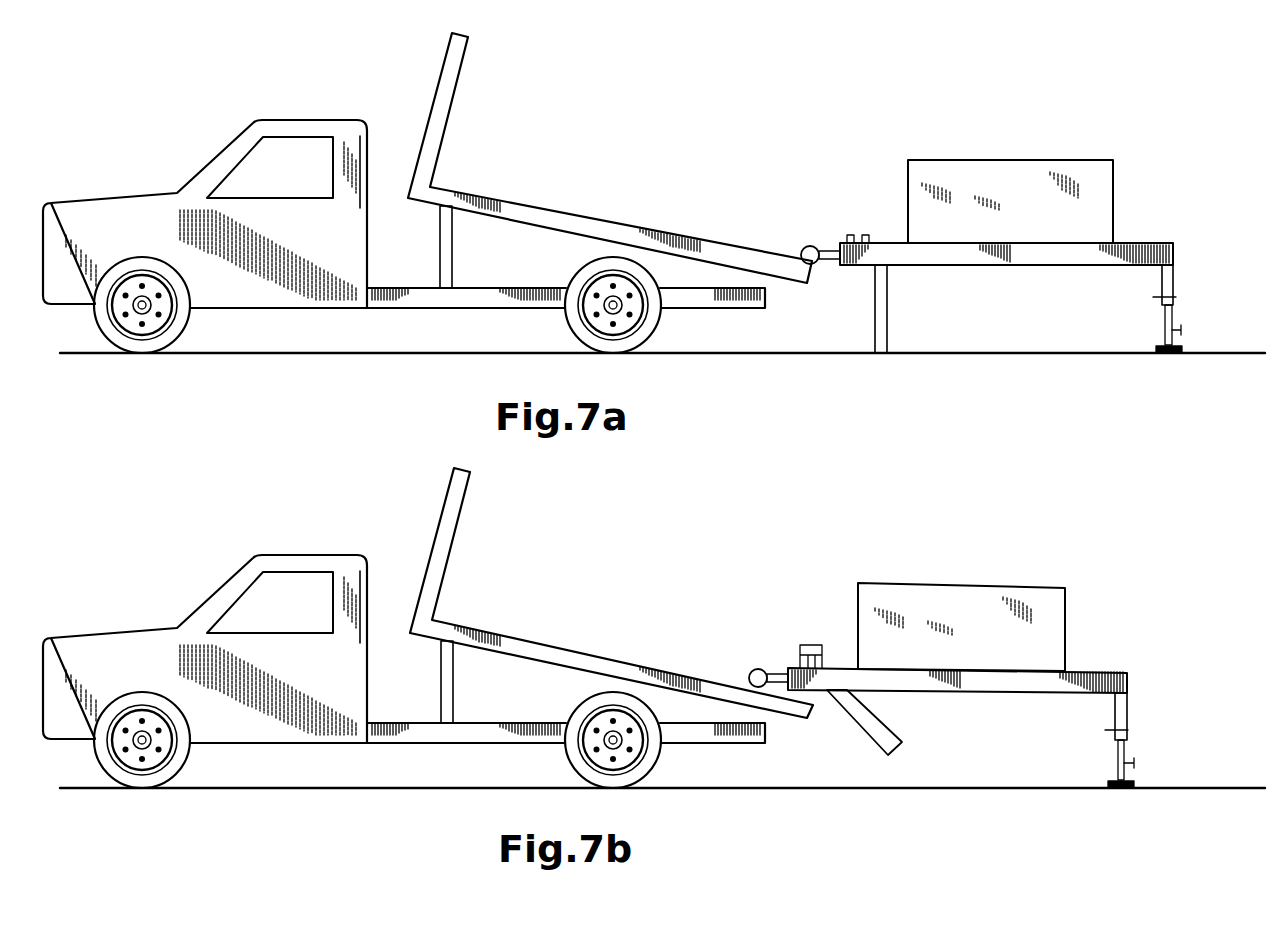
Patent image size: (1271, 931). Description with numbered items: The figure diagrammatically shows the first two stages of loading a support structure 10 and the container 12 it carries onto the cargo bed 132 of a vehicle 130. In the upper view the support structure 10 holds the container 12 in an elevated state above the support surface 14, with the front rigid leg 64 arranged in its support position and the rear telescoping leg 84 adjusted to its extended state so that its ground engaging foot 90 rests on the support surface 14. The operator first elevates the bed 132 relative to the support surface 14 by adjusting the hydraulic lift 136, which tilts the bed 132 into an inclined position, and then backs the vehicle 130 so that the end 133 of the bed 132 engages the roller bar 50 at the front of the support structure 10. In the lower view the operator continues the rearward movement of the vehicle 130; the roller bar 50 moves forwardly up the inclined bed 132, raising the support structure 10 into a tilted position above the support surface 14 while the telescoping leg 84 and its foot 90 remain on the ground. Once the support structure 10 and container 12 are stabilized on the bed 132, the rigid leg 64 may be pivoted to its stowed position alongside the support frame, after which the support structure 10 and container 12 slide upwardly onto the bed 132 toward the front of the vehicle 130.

In FIG. 7A, the support structure 10 is at (846, 193).
In FIG. 7B, the support structure 10 is at (797, 619).
In FIG. 7A, the container 12 is at (1013, 196).
In FIG. 7B, the container 12 is at (966, 621).
In FIG. 7A, the support surface 14 is at (272, 357).
In FIG. 7B, the support surface 14 is at (276, 790).
In FIG. 7A, the roller bar 50 is at (803, 248).
In FIG. 7B, the roller bar 50 is at (752, 669).
In FIG. 7A, the rigid leg 64 is at (880, 315).
In FIG. 7B, the rigid leg 64 is at (898, 745).
In FIG. 7A, the telescoping leg 84 is at (1170, 280).
In FIG. 7B, the telescoping leg 84 is at (1122, 711).
In FIG. 7A, the ground engaging foot 90 is at (1160, 346).
In FIG. 7B, the ground engaging foot 90 is at (1112, 781).
In FIG. 7A, the vehicle 130 is at (124, 216).
In FIG. 7B, the vehicle 130 is at (124, 651).
In FIG. 7A, the cargo bed 132 is at (485, 198).
In FIG. 7B, the cargo bed 132 is at (485, 633).
In FIG. 7A, the end of the bed 133 is at (703, 297).
In FIG. 7B, the end of the bed 133 is at (705, 732).
In FIG. 7A, the hydraulic lift 136 is at (453, 253).
In FIG. 7B, the hydraulic lift 136 is at (453, 688).